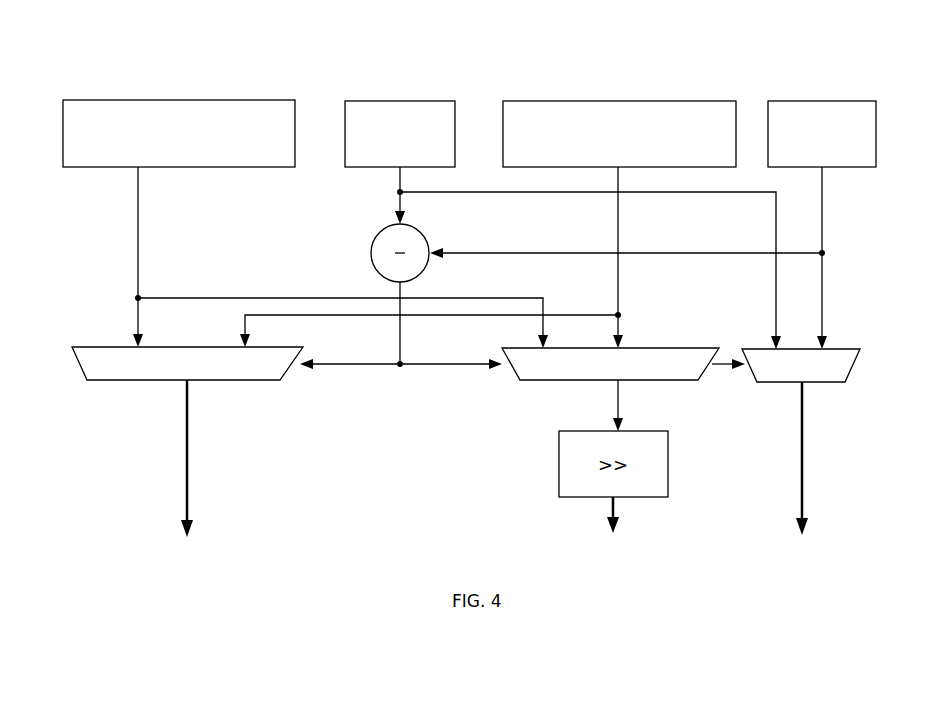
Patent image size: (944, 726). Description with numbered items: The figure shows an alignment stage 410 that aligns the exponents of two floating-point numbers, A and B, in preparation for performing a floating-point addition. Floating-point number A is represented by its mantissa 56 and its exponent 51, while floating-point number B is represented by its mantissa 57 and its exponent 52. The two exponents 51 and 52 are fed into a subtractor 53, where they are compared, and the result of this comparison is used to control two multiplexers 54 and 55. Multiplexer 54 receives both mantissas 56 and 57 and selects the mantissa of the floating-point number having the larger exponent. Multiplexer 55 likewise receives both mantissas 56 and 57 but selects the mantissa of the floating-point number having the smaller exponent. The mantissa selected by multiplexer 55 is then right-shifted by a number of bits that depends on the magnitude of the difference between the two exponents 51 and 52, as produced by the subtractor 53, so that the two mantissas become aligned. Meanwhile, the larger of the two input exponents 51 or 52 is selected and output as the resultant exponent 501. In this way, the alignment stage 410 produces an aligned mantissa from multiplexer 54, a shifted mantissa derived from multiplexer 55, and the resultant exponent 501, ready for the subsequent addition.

The alignment stage 410 is at (200, 34).
The mantissa 56 is at (87, 100).
The exponent 51 is at (363, 100).
The mantissa 57 is at (537, 100).
The exponent 52 is at (813, 100).
The subtractor 53 is at (372, 246).
The multiplexer 54 is at (88, 347).
The multiplexer 55 is at (520, 382).
The resultant exponent 501 is at (803, 500).